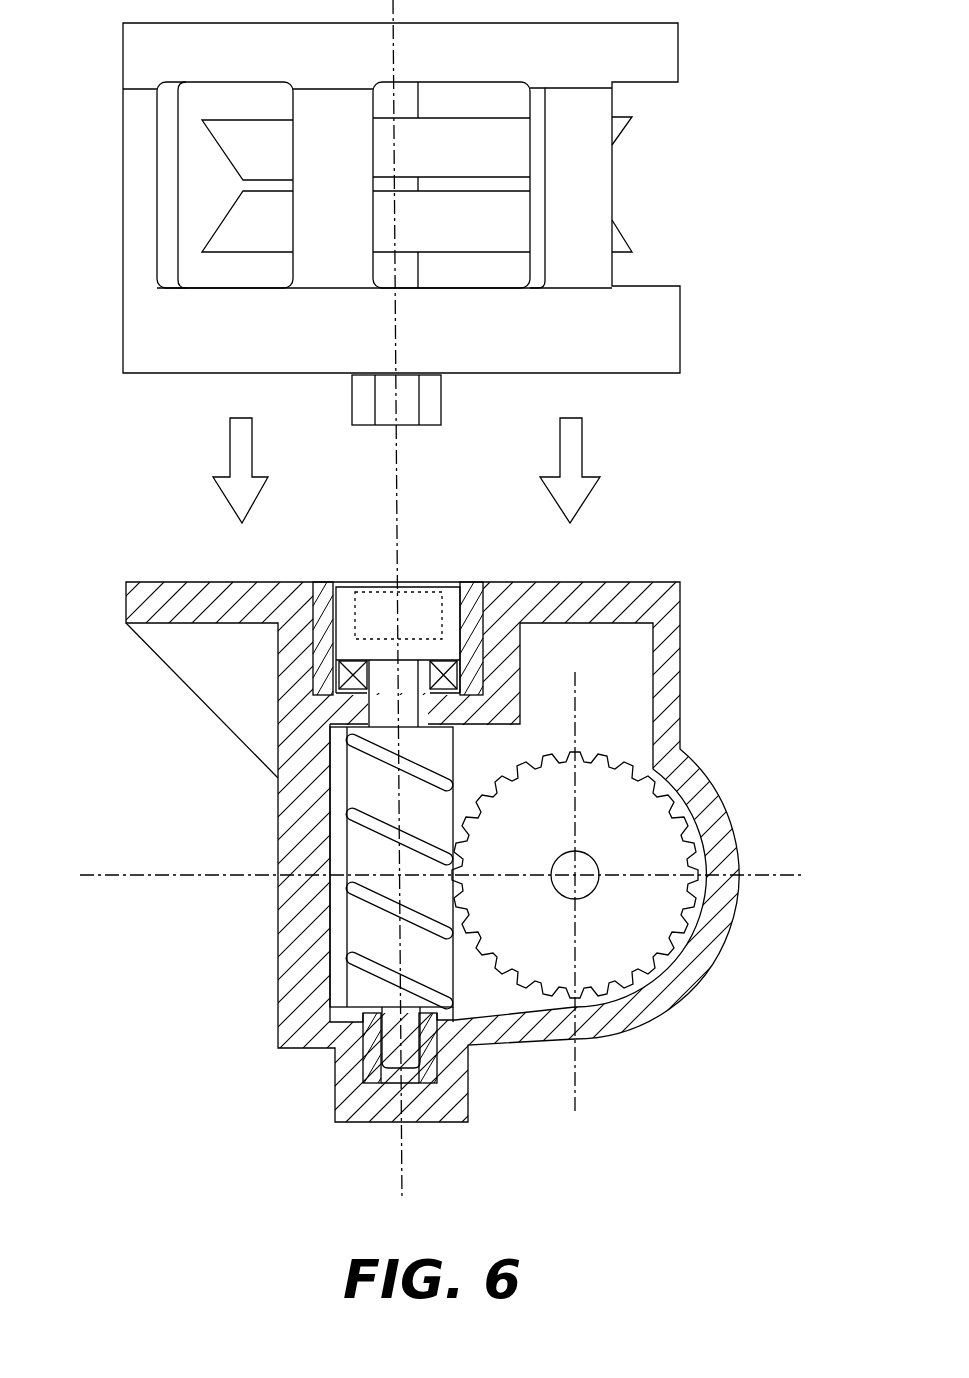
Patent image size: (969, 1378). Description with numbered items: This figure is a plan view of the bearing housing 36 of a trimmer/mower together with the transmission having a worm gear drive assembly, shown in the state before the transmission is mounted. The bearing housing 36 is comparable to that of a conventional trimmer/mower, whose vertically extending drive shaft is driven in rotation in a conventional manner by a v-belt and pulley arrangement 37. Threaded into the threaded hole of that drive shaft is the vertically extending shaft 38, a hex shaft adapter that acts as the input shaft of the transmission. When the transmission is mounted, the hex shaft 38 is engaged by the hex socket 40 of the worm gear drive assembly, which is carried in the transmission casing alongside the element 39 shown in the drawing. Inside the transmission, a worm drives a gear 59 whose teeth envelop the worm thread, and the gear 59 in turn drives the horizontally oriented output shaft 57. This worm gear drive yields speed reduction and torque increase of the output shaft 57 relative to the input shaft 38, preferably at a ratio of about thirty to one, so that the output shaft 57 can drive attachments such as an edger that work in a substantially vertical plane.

The bearing housing 36 is at (680, 335).
The v-belt and pulley arrangement 37 is at (192, 181).
The vertically extending shaft 38 is at (441, 407).
The bearing sleeve 39 is at (465, 582).
The hex socket 40 is at (377, 598).
The horizontal output shaft 57 is at (592, 853).
The gear 59 is at (697, 857).